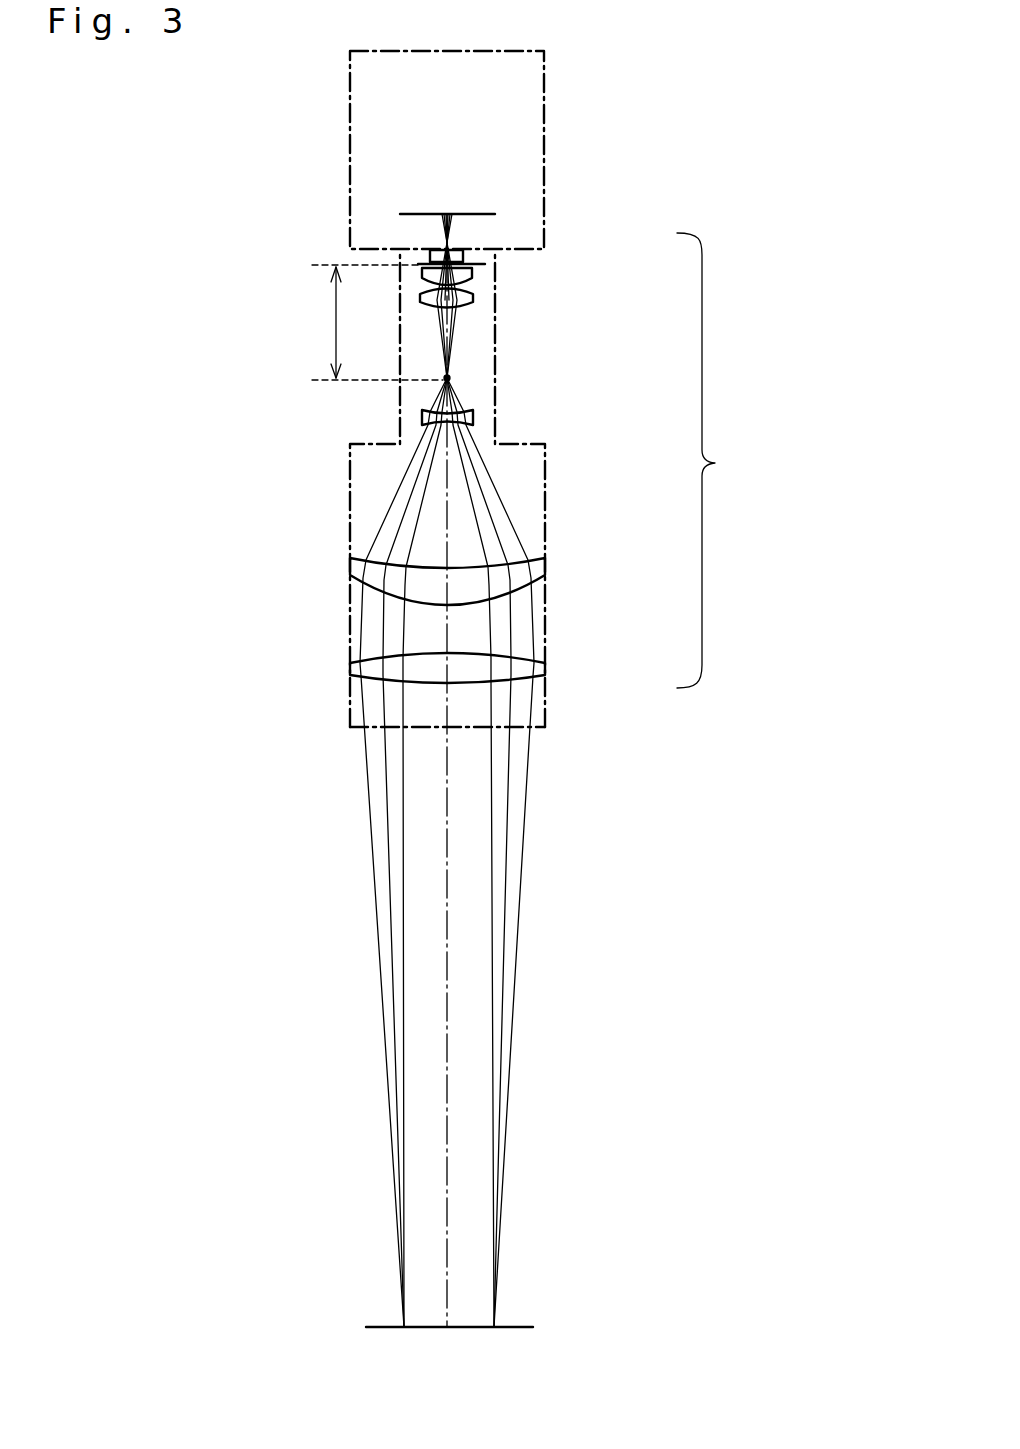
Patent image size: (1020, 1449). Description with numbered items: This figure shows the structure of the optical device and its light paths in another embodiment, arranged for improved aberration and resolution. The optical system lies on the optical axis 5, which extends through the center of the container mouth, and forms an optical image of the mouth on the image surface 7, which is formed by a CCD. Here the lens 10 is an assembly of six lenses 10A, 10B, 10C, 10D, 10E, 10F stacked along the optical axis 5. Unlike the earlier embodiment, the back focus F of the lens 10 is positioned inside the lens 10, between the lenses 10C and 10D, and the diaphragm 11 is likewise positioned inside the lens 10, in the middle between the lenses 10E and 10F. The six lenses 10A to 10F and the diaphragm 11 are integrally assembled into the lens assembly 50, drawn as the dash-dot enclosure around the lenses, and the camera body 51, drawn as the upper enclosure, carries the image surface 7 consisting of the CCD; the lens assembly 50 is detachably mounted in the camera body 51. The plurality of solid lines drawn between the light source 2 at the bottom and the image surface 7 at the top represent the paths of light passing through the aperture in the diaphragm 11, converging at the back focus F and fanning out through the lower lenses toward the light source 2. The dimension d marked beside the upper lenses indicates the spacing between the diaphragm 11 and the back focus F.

The camera body 51 is at (546, 126).
The image surface 7 is at (496, 213).
The diaphragm 11 is at (420, 263).
The lens 10F is at (464, 253).
The lens 10E is at (473, 275).
The lens 10D is at (473, 299).
The lens 10C is at (474, 416).
The lens 10B is at (546, 564).
The lens 10A is at (546, 668).
The lens 10 is at (582, 460).
The lens assembly 50 is at (350, 520).
The optical axis 5 is at (448, 872).
The light source 2 is at (510, 1327).
The back focus F is at (443, 380).
The distance between aperture and focal point d is at (375, 322).